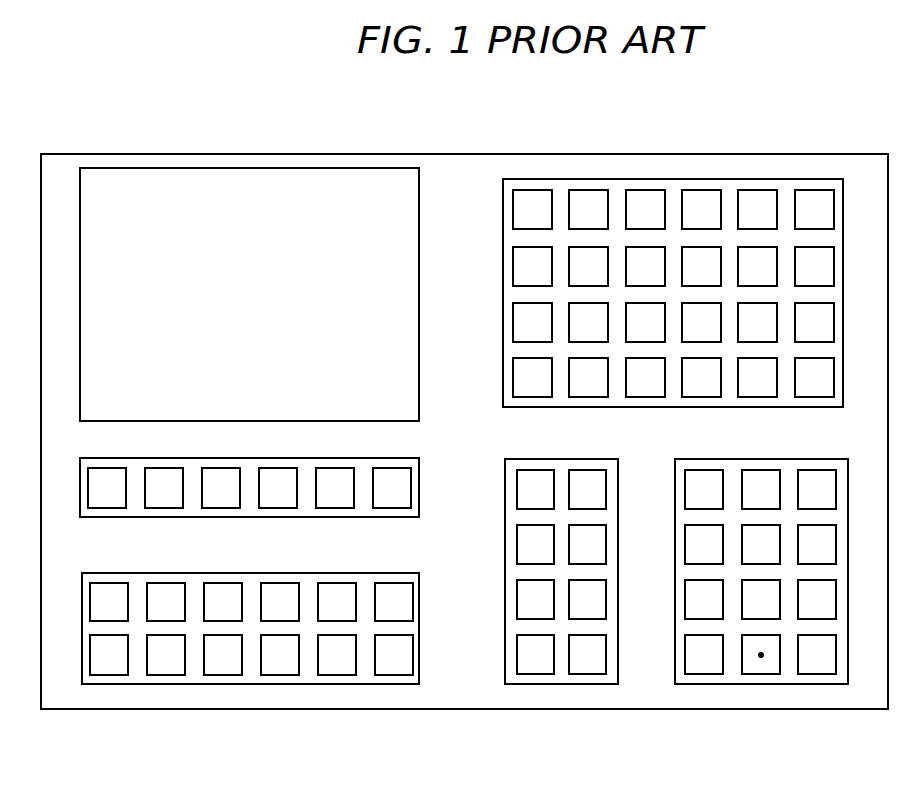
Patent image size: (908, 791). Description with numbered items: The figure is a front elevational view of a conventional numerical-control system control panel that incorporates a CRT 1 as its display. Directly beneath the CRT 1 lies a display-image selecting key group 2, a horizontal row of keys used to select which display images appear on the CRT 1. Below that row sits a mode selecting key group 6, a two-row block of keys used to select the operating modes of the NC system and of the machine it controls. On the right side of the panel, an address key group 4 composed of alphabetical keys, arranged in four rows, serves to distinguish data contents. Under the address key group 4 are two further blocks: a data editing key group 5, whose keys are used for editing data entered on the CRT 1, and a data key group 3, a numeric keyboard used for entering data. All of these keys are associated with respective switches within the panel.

The CRT 1 is at (80, 275).
The display-image selecting key group 2 is at (80, 485).
The data key group (numeric keyboard) 3 is at (765, 684).
The address key group 4 is at (704, 179).
The data editing key group 5 is at (566, 684).
The mode selecting key group 6 is at (265, 684).